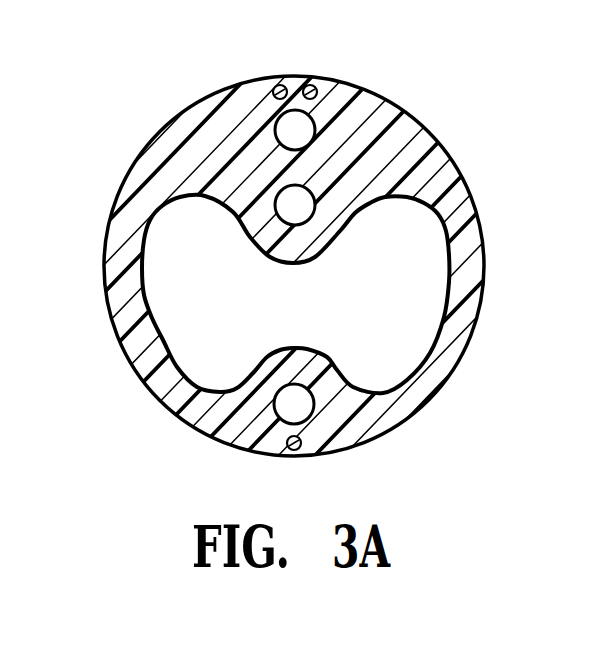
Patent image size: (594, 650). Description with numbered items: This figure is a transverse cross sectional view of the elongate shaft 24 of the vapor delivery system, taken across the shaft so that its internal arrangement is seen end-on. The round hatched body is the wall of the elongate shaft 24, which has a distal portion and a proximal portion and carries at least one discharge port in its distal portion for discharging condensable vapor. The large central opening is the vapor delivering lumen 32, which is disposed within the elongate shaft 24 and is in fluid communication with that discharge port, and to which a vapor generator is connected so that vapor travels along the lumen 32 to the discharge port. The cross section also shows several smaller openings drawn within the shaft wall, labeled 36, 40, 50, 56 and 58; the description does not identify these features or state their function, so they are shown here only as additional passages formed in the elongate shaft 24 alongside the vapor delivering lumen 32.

The elongate shaft 24 is at (477, 212).
The vapor delivering lumen 32 is at (170, 301).
The lumen 36 is at (283, 203).
The lumen 40 is at (283, 132).
The lumen 50 is at (303, 407).
The pull wire lumens 56 is at (322, 87).
The pull wire lumen 58 is at (287, 447).